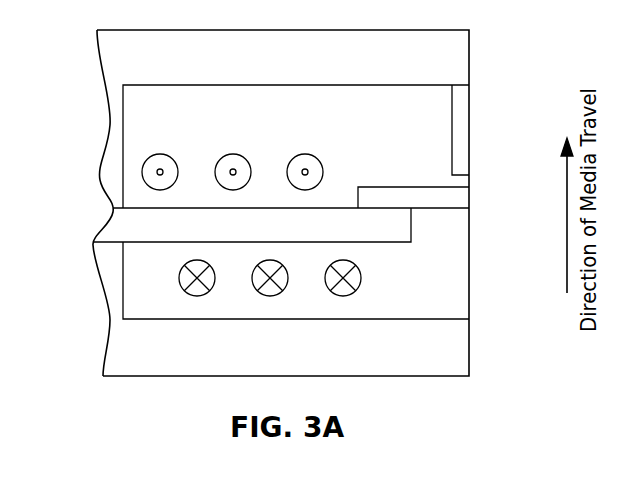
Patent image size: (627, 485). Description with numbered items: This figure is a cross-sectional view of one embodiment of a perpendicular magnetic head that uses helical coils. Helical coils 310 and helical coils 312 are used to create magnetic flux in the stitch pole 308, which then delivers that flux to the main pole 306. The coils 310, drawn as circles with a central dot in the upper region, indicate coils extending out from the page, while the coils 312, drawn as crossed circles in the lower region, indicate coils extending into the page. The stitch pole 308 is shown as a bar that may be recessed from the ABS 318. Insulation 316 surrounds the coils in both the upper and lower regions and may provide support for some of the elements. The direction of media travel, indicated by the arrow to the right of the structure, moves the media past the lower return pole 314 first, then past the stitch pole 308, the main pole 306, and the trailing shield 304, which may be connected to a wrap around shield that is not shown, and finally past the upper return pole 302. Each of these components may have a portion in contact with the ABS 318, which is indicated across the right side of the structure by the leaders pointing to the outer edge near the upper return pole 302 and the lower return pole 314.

The upper return pole 302 is at (372, 68).
The trailing shield 304 is at (469, 135).
The main pole 306 is at (469, 192).
The stitch pole 308 is at (314, 235).
The helical coils 310 is at (158, 154).
The helical coils 312 is at (178, 285).
The lower return pole 314 is at (314, 360).
The insulation 316 is at (414, 143).
The ABS 318 is at (469, 51).